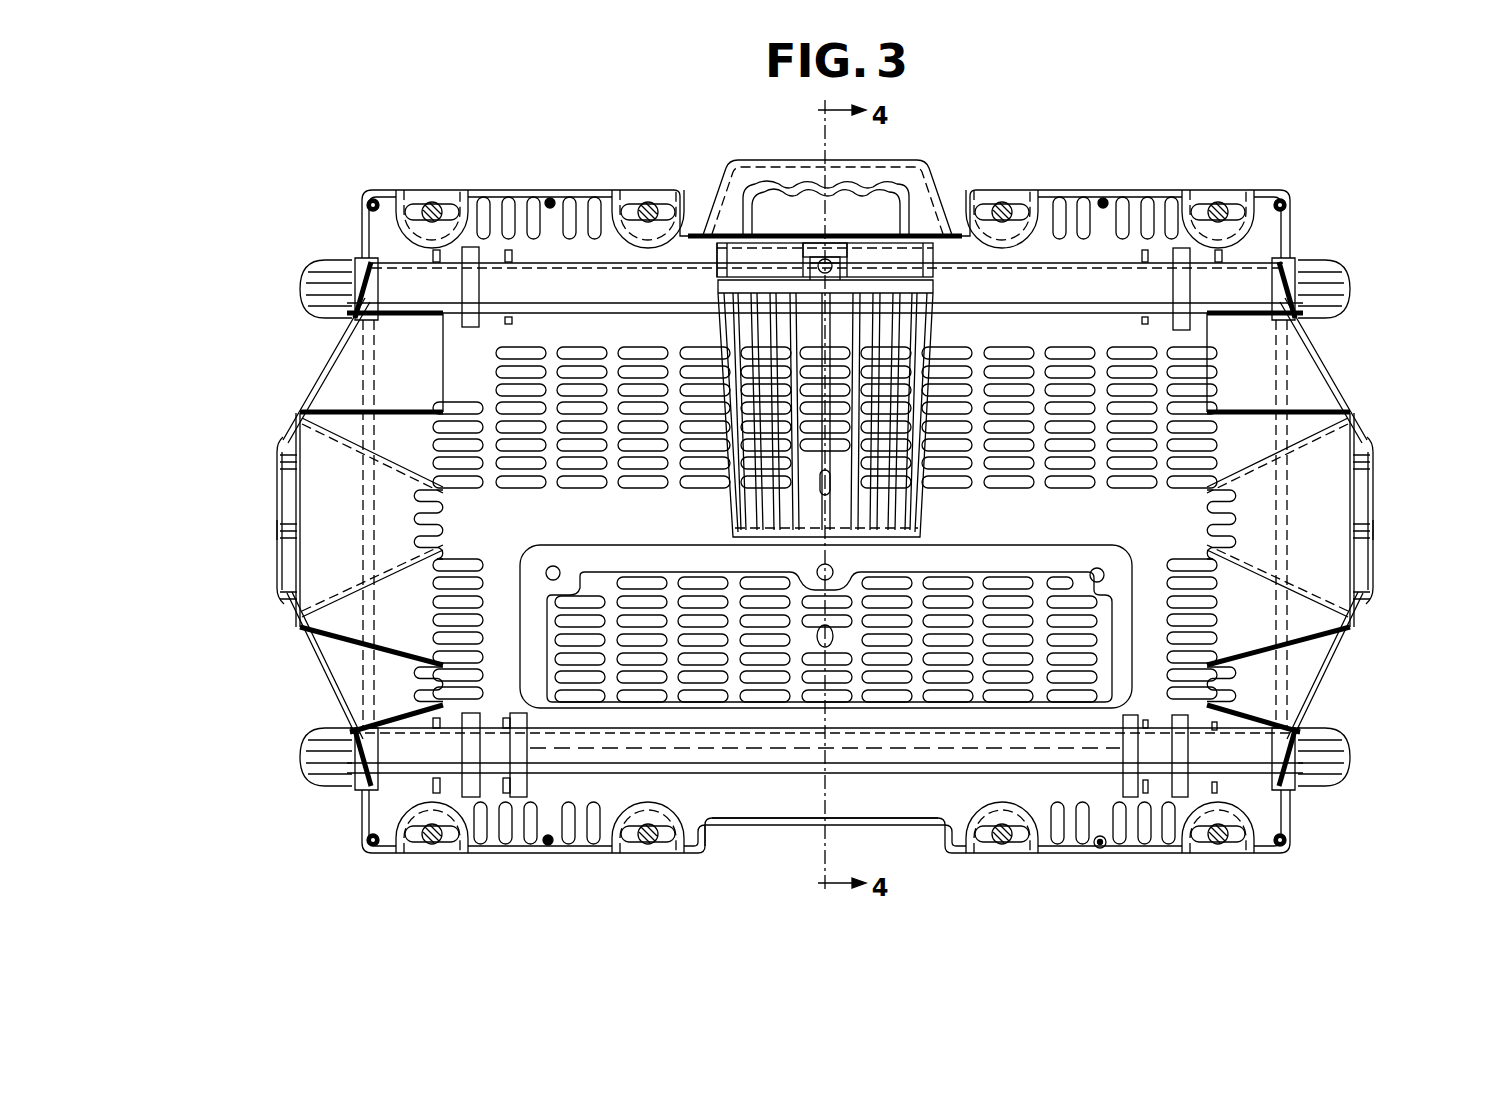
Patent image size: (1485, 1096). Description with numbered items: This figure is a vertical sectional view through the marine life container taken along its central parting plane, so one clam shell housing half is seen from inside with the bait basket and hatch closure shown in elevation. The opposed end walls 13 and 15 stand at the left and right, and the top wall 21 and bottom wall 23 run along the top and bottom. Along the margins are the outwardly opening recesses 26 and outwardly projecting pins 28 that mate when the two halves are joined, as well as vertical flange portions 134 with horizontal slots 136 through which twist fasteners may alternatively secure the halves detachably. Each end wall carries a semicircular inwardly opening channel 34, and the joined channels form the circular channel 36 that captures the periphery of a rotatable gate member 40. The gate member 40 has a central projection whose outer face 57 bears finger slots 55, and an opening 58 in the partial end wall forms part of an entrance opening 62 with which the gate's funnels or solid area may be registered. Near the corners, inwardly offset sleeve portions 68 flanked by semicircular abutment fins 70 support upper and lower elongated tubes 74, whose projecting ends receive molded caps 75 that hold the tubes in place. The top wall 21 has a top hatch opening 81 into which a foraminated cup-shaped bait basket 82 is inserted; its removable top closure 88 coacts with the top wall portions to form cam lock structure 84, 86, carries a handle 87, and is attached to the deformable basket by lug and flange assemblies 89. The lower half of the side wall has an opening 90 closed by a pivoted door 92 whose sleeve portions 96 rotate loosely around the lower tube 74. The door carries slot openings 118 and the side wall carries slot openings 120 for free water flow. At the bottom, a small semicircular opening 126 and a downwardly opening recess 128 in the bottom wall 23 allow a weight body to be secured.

The end wall 13 is at (312, 378).
The end wall 15 is at (1338, 378).
The top wall 21 is at (510, 192).
The bottom wall 23 is at (913, 842).
The recess 26 is at (550, 198).
The pin 28 is at (373, 198).
The channel 34 is at (362, 262).
The circular channel 36 is at (362, 786).
The gate member 40 is at (256, 574).
The finger slots 55 is at (283, 492).
The outer face 57 is at (283, 548).
The opening 58 is at (325, 690).
The entrance opening 62 is at (300, 634).
The sleeve portion 68 is at (476, 245).
The abutment fin 70 is at (437, 252).
The tube 74 is at (590, 305).
The cap 75 is at (315, 292).
The top hatch opening 81 is at (933, 266).
The bait basket 82 is at (920, 515).
The cam lock structure 84 is at (840, 240).
The cam lock structure 86 is at (717, 270).
The handle 87 is at (748, 176).
The top closure 88 is at (898, 234).
The lug and flange assembly 89 is at (812, 240).
The opening 90 is at (1120, 562).
The door 92 is at (1024, 550).
The sleeve portion 96 is at (517, 798).
The slot openings 118 is at (700, 600).
The slot openings 120 is at (570, 465).
The semicircular opening 126 is at (822, 820).
The recess 128 is at (712, 832).
The flange portion 134 is at (412, 200).
The slot 136 is at (440, 205).